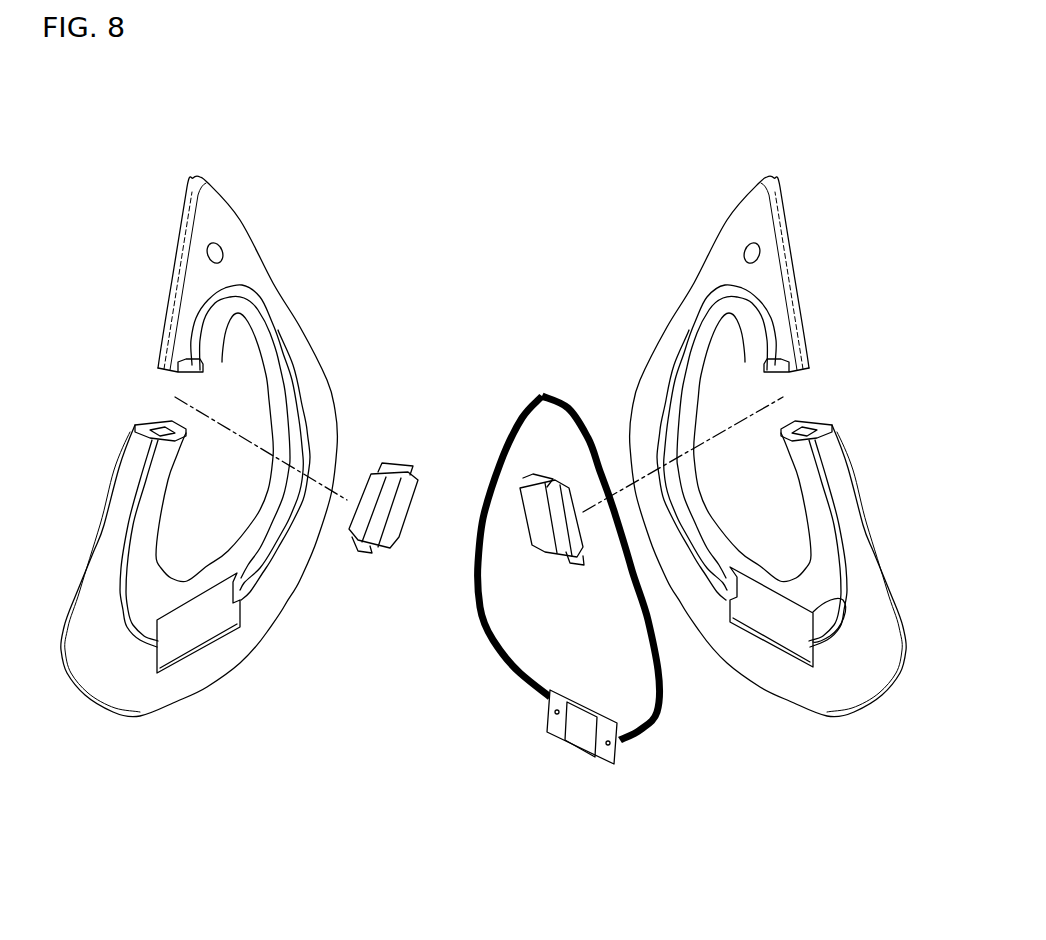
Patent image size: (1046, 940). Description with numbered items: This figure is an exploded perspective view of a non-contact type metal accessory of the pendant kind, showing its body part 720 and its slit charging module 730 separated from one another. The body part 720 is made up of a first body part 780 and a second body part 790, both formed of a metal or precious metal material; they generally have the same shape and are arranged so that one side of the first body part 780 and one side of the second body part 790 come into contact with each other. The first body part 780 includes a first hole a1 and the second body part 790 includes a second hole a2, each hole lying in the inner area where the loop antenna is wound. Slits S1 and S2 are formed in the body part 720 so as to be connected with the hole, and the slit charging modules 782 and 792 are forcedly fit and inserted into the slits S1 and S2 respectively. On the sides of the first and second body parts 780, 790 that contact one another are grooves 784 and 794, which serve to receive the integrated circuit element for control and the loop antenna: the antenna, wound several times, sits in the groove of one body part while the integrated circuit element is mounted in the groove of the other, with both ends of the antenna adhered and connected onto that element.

The body part 720 is at (547, 83).
The first body part 780 is at (240, 227).
The second body part 790 is at (733, 210).
The slit charging module 730 is at (538, 293).
The slit charging module 782 is at (393, 462).
The slit charging module 792 is at (567, 494).
The groove 784 is at (267, 570).
The groove 794 is at (840, 600).
The slit S1 is at (160, 406).
The slit S2 is at (804, 404).
The first hole a1 is at (207, 528).
The second hole a2 is at (790, 524).